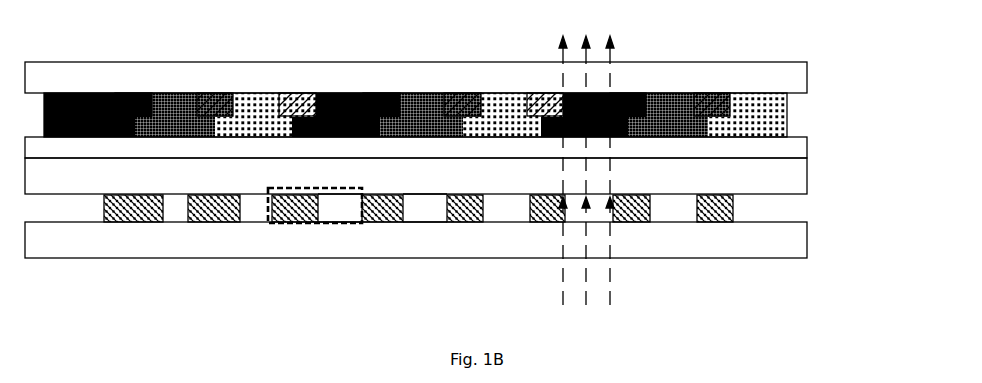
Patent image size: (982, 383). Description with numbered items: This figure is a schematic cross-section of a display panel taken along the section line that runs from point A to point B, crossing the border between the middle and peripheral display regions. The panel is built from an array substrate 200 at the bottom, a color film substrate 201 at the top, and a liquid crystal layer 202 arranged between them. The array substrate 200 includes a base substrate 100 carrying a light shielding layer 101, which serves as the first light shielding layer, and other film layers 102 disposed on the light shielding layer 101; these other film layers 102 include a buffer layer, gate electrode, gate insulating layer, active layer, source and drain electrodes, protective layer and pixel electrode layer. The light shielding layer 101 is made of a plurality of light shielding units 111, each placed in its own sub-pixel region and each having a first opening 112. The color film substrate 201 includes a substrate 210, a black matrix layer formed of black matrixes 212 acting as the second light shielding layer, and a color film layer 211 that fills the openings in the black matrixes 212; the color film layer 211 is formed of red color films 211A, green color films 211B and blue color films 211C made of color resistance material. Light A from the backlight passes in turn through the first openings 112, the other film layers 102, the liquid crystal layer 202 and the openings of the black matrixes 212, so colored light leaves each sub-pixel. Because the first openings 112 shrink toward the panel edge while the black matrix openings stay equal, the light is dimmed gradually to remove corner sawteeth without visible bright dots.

The base substrate 100 is at (798, 247).
The light shielding layer 101 is at (498, 244).
The other film layers 102 is at (798, 183).
The light shielding units 111 is at (318, 226).
The first opening 112 is at (330, 208).
The array substrate 200 is at (483, 223).
The color film substrate 201 is at (480, 76).
The liquid crystal layer 202 is at (795, 149).
The substrate 210 is at (795, 84).
The color film layer 211 is at (454, 76).
The red color films 211A is at (78, 100).
The green color films 211B is at (178, 103).
The blue color films 211C is at (263, 103).
The black matrixes 212 is at (128, 100).
The light A is at (604, 175).
The line AB end point B is at (552, 171).